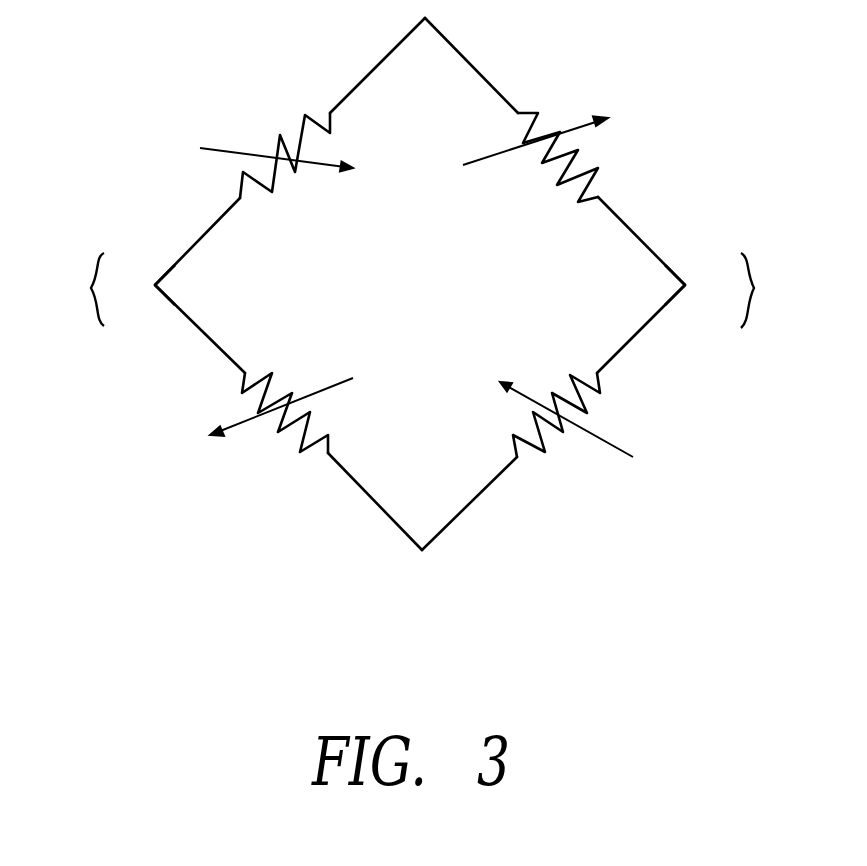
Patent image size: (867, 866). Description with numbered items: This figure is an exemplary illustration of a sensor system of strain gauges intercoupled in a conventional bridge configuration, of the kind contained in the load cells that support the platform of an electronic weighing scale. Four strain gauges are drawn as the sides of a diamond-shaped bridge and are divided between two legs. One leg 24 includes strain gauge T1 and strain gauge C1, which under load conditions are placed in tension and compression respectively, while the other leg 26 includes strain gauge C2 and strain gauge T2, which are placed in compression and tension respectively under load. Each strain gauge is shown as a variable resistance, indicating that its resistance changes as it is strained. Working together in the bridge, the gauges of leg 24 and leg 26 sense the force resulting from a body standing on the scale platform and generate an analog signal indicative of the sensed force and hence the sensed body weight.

The leg 24 is at (105, 289).
The leg 26 is at (730, 290).
The strain gauge T1 is at (264, 114).
The strain gauge T2 is at (599, 462).
The strain gauge C1 is at (260, 458).
The strain gauge C2 is at (587, 116).